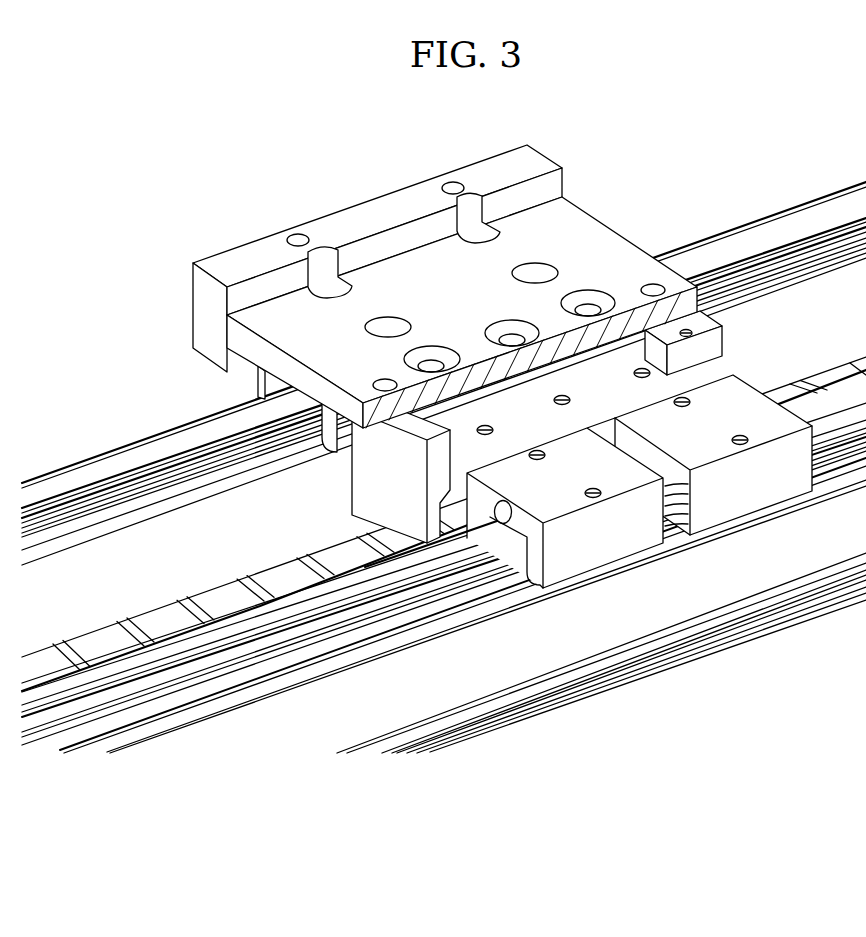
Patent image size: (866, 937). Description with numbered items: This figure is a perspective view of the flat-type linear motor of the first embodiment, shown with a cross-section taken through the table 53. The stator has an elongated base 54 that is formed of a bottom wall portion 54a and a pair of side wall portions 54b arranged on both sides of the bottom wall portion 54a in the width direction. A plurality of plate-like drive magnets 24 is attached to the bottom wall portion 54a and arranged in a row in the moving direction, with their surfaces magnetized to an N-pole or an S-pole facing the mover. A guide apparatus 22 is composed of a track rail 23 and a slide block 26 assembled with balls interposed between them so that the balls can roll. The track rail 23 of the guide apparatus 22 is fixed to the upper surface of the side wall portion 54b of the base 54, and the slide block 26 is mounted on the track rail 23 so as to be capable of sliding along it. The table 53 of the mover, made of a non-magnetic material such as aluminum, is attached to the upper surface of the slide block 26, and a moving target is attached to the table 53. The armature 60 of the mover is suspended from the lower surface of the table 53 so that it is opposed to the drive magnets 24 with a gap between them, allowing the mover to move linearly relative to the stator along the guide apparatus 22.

The guide apparatus 22 is at (588, 611).
The track rail 23 is at (477, 542).
The drive magnet 24 is at (353, 563).
The slide block 26 is at (577, 545).
The table 53 is at (413, 275).
The base 54 is at (285, 725).
The bottom wall portion 54a is at (143, 635).
The side wall portion 54b is at (180, 543).
The armature 60 is at (453, 518).